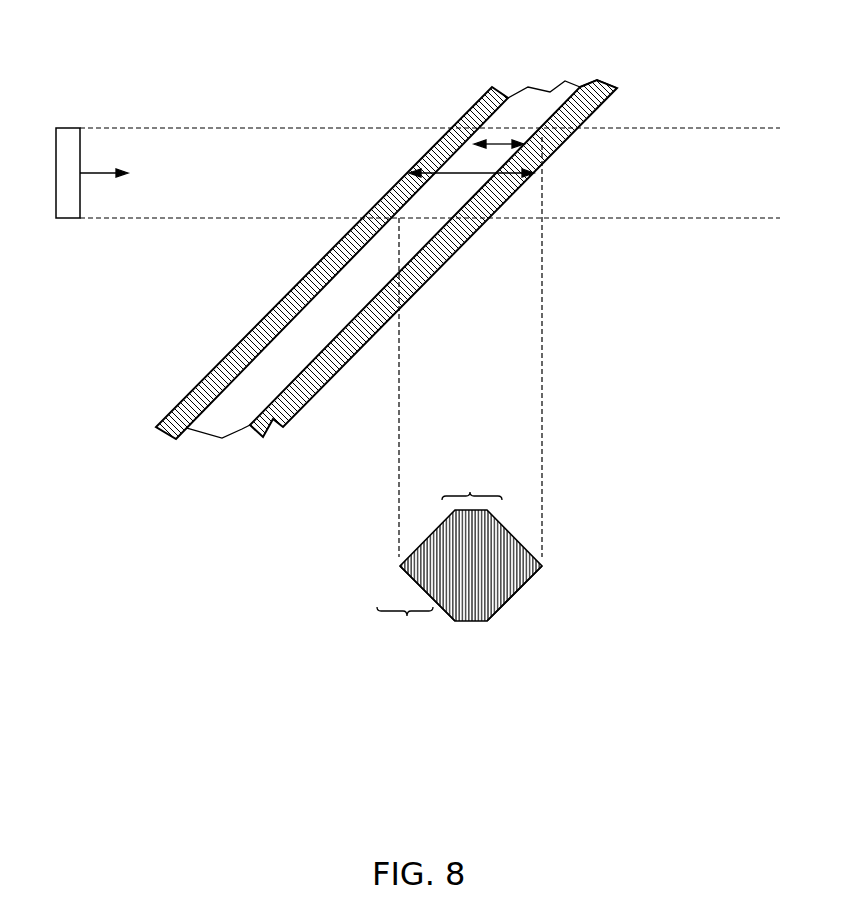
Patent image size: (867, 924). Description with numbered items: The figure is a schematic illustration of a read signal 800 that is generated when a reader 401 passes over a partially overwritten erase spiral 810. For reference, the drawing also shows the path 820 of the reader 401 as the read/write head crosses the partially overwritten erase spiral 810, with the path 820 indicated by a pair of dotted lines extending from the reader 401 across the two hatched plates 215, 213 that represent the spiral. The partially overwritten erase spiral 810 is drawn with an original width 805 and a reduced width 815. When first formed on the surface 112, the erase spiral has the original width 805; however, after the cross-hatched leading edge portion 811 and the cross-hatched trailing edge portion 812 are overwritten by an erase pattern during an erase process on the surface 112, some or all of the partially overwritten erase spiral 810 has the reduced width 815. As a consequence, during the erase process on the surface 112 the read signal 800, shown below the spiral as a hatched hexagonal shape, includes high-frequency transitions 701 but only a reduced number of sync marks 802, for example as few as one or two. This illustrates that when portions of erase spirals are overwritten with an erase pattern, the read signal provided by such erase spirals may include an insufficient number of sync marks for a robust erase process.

The surface 112 is at (145, 321).
The second plate 213 is at (617, 88).
The first plate 215 is at (490, 92).
The reader 401 is at (67, 128).
The high-frequency transitions 701 is at (470, 492).
The read signal 800 is at (575, 489).
The sync marks 802 is at (435, 631).
The original width 805 is at (470, 178).
The partially overwritten erase spiral 810 is at (242, 431).
The leading edge portion 811 is at (510, 68).
The trailing edge portion 812 is at (601, 58).
The reduced width 815 is at (502, 142).
The path 820 is at (212, 128).